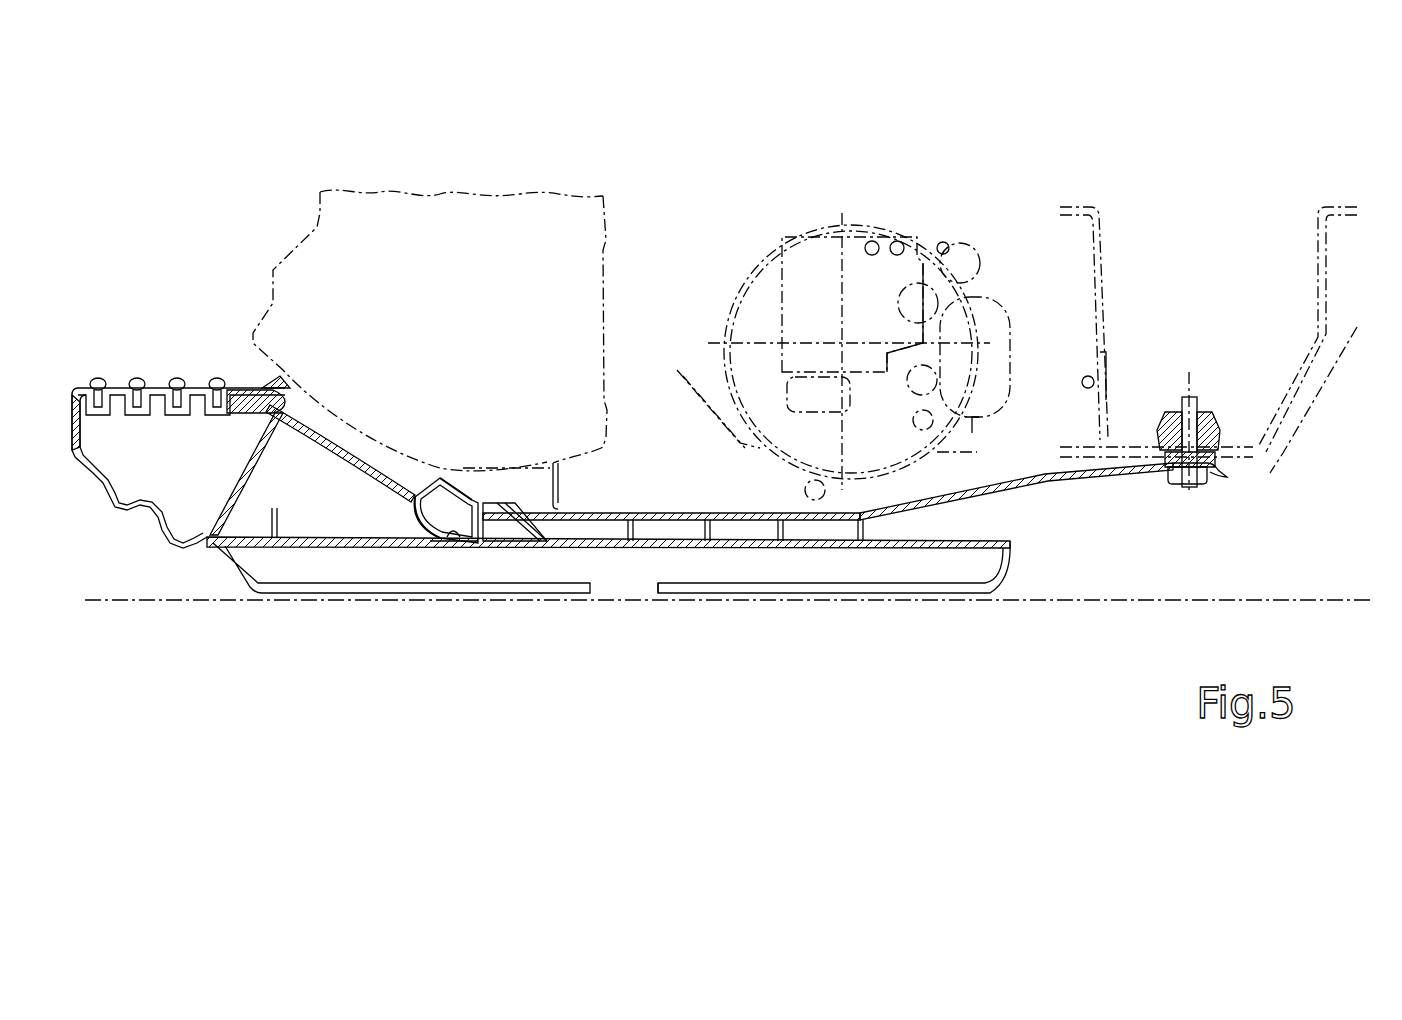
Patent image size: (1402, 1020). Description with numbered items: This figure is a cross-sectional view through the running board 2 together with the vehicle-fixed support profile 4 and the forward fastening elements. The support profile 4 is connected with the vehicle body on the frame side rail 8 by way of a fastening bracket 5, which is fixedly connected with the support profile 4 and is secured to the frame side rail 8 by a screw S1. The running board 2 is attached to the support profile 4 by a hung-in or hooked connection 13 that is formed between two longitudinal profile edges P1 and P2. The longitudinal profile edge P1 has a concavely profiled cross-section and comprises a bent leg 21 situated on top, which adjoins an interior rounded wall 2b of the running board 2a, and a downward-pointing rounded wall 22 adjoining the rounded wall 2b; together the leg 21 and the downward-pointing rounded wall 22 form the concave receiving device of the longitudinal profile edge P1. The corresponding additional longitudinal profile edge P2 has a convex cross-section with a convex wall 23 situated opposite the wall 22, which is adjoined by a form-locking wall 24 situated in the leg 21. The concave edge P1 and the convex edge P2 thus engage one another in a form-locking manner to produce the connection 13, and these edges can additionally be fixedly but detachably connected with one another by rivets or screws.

The running board 2 is at (181, 442).
The running board 2a is at (157, 388).
The interior rounded wall 2b is at (305, 452).
The support profile 4 is at (780, 548).
The fastening bracket 5 is at (1128, 468).
The frame side rail 8 is at (1310, 323).
The hooked connection 13 is at (437, 553).
The bent leg 21 is at (453, 480).
The downward-pointing rounded wall 22 is at (430, 523).
The convex wall 23 is at (467, 547).
The form-locking wall 24 is at (473, 493).
The longitudinal profile edge P1 is at (414, 513).
The additional longitudinal profile edge P2 is at (465, 506).
The screw S1 is at (1193, 403).